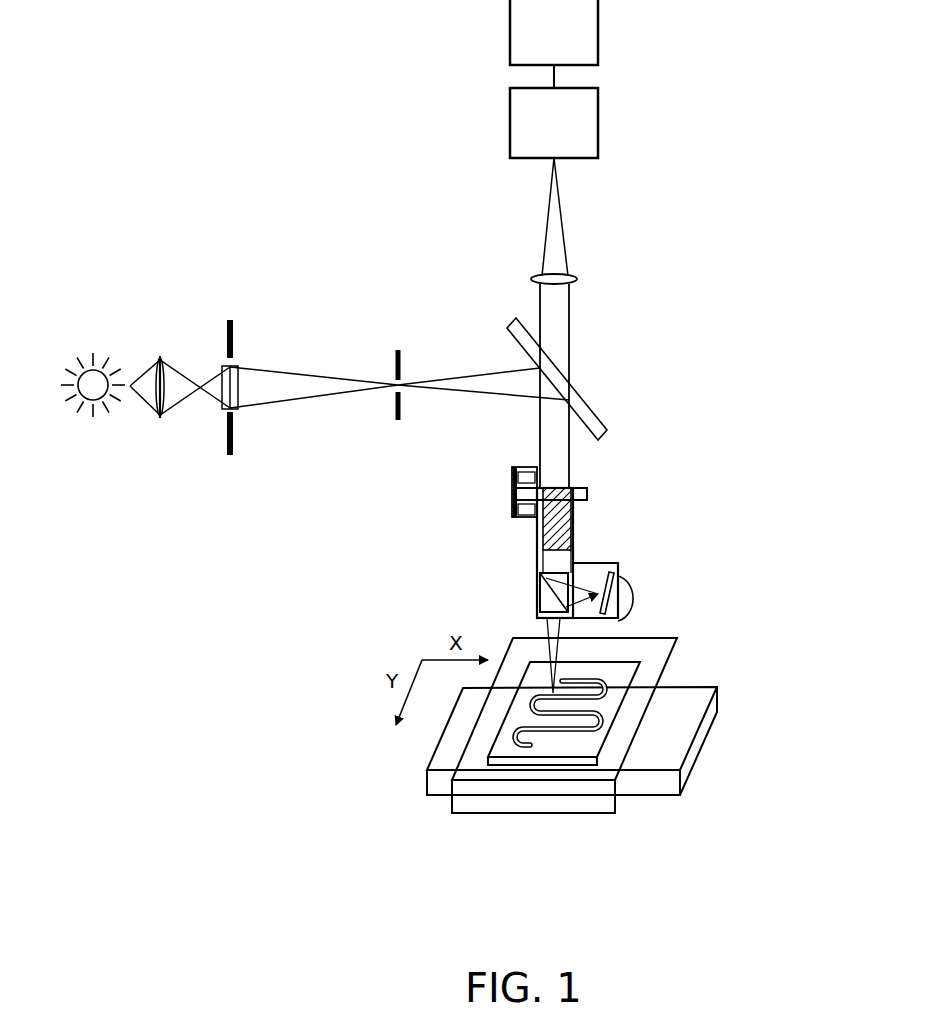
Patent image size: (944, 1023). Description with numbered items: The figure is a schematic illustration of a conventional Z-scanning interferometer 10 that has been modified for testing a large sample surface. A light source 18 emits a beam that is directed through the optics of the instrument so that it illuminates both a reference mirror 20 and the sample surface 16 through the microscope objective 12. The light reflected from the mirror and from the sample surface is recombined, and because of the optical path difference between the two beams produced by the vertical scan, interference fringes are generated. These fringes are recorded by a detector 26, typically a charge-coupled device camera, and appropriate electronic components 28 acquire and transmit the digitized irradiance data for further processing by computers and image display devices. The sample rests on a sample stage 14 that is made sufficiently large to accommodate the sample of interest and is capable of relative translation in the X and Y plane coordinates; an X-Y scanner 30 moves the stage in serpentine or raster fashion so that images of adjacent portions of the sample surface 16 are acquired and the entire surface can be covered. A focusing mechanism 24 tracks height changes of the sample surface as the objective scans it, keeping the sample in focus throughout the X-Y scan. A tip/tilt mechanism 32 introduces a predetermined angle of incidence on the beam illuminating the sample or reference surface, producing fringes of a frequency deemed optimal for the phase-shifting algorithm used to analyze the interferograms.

The Z-scanning interferometer 10 is at (634, 325).
The microscope objective 12 is at (573, 510).
The sample stage 14 is at (653, 710).
The sample surface 16 is at (642, 656).
The light source 18 is at (93, 352).
The reference mirror 20 is at (620, 620).
The focusing mechanism 24 is at (512, 492).
The detector 26 is at (510, 118).
The electronic components 28 is at (598, 38).
The X-Y scanner 30 is at (452, 737).
The tip/tilt mechanism 32 is at (636, 585).